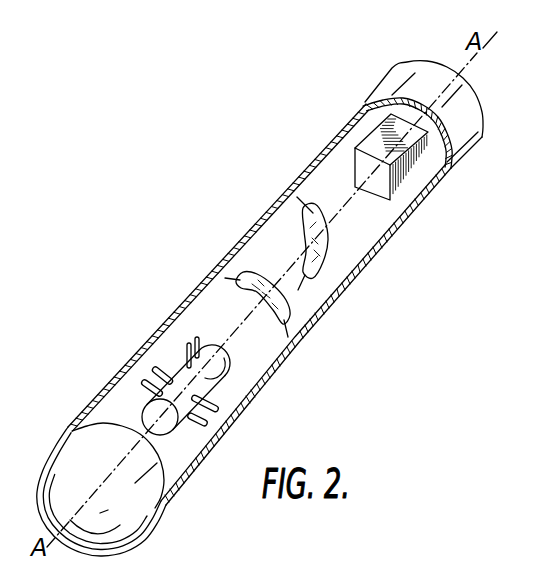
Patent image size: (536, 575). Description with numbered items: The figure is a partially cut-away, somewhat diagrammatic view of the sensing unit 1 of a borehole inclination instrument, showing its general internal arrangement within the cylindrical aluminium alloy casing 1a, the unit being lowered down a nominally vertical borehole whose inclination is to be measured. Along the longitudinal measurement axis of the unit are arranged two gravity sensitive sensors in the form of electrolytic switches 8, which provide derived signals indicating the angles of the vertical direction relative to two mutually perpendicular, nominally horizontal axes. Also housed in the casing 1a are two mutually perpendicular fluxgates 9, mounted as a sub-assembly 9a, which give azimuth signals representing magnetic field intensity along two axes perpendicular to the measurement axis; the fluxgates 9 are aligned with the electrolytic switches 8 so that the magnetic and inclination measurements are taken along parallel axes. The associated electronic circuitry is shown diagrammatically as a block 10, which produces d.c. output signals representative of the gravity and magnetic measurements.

The sensing unit 1 is at (260, 308).
The cylindrical aluminium alloy casing 1a is at (294, 358).
The electrolytic switches 8 is at (328, 244).
The fluxgates 9 is at (203, 355).
The fluxgate sub-assembly 9a is at (143, 395).
The electronic circuitry block 10 is at (400, 186).